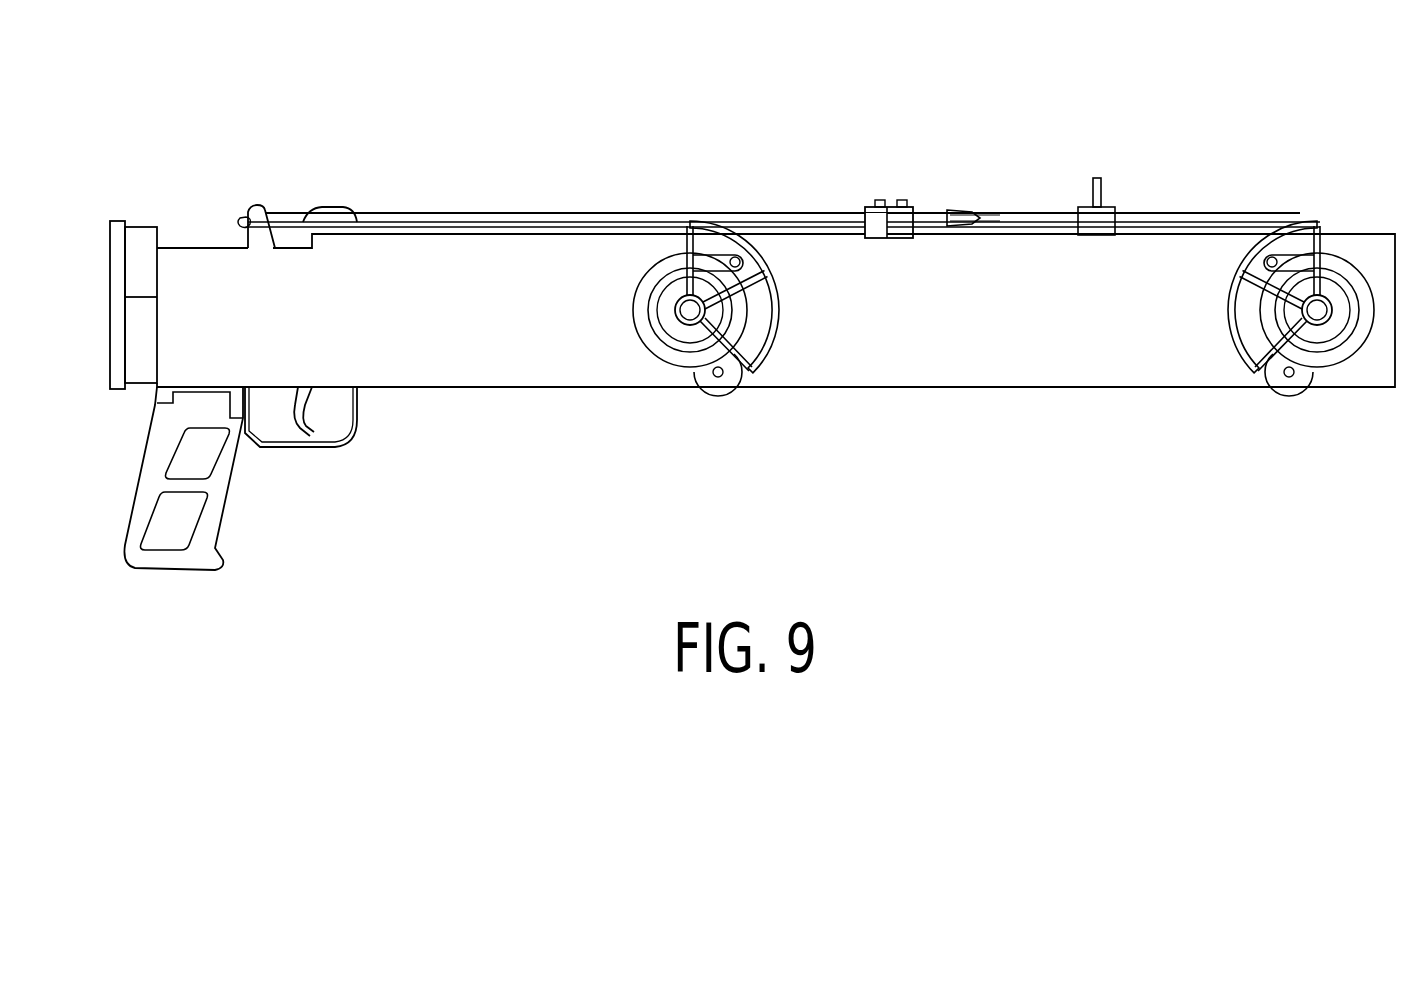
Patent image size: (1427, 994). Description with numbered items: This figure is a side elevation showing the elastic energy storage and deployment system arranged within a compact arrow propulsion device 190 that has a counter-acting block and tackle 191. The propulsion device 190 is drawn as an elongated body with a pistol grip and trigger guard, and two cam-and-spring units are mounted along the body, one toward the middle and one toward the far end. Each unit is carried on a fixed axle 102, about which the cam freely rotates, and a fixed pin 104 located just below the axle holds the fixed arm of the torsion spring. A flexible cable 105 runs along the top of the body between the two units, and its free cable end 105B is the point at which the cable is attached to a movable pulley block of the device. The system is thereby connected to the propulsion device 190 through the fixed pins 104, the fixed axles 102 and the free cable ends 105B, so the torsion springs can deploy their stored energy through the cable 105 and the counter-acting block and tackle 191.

The compact arrow propulsion device 190 is at (312, 495).
The counter-acting block and tackle 191 is at (1018, 178).
The flexible cable 105 is at (810, 207).
The free cable end 105B is at (870, 207).
The fixed axle 102 is at (690, 310).
The fixed pin 104 is at (718, 377).